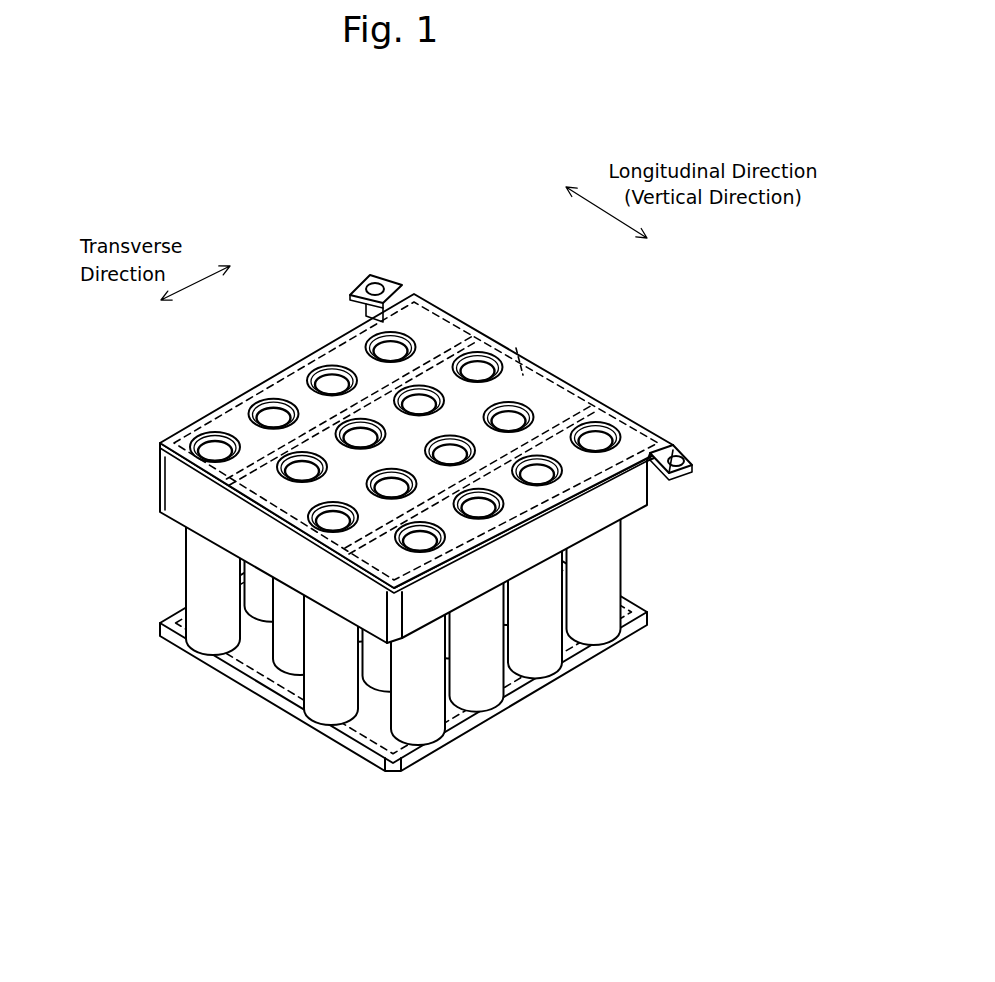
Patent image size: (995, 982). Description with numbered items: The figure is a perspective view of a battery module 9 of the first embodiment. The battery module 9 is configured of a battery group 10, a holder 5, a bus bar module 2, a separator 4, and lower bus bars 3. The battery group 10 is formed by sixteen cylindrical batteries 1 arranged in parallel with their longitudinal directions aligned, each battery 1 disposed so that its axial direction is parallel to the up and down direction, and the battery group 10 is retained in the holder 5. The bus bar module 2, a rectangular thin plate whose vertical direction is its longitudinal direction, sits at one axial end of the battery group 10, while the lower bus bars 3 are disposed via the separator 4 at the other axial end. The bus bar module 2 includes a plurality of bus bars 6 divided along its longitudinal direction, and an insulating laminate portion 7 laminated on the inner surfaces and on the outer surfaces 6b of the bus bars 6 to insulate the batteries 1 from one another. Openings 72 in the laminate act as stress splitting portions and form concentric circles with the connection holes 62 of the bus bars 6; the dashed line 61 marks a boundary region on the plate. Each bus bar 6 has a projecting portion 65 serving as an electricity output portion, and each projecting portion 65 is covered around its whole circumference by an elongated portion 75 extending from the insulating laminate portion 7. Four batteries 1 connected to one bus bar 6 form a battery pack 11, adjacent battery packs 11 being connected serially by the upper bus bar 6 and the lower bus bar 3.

The battery 1 is at (355, 649).
The bus bar module 2 is at (413, 396).
The lower bus bar 3 is at (440, 621).
The separator 4 is at (648, 610).
The holder 5 is at (612, 498).
The bus bar 6 is at (422, 404).
The outer surface 6b is at (521, 346).
The insulating laminate portion 7 is at (268, 380).
The battery module 9 is at (564, 315).
The battery group 10 is at (402, 649).
The battery pack 11 is at (318, 706).
The slit line 61 is at (324, 421).
The connection hole 62 is at (159, 470).
The projecting portion 65 is at (367, 281).
The opening 72 is at (217, 440).
The elongated portion 75 is at (686, 455).